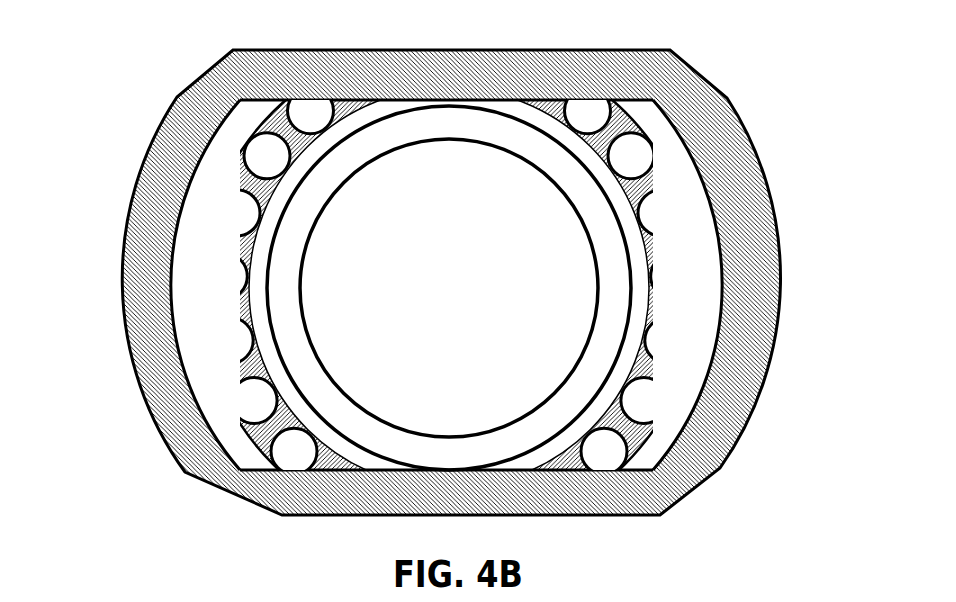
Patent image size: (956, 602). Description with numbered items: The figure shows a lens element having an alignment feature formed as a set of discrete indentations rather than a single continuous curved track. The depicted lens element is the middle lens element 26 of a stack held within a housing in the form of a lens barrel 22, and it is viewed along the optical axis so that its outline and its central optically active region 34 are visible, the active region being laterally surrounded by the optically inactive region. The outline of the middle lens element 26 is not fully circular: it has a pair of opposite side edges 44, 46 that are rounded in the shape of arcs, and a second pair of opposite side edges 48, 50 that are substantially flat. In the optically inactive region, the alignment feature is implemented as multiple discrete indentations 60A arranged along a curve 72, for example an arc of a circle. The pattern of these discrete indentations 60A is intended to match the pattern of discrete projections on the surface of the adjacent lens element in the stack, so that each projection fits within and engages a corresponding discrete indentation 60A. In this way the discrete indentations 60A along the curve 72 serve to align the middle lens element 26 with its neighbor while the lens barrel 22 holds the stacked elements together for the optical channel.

The lens barrel 22 is at (572, 515).
The middle lens element 26 is at (510, 198).
The optically active region 34 is at (452, 294).
The rounded side edge 44 is at (187, 200).
The rounded side edge 46 is at (687, 400).
The flat side edge 48 is at (435, 473).
The flat side edge 50 is at (495, 100).
The discrete indentations 60A is at (252, 147).
The curve 72 is at (685, 242).